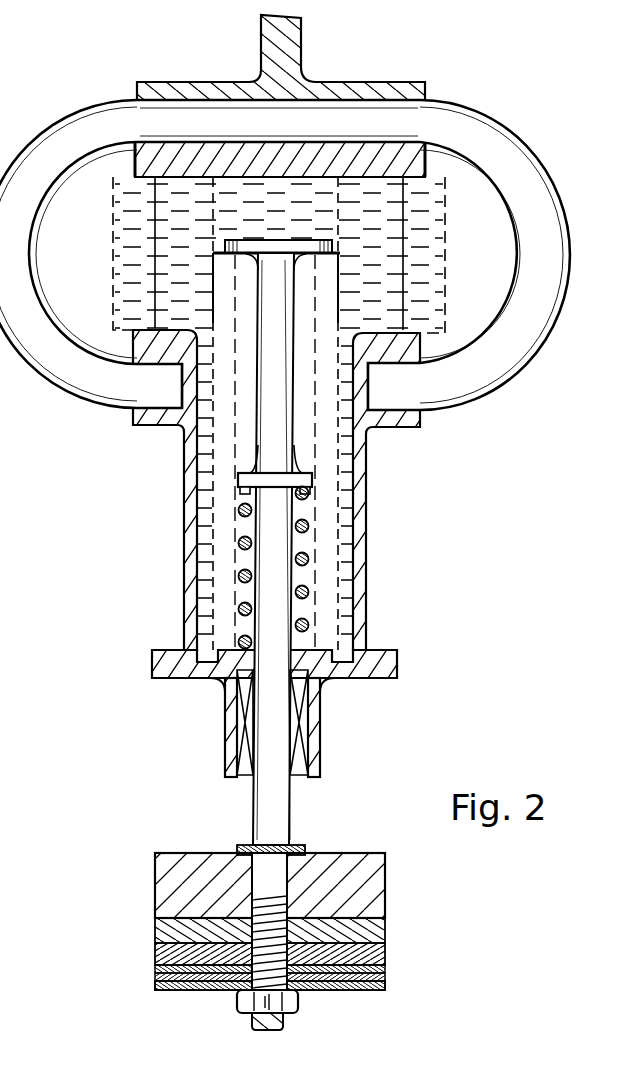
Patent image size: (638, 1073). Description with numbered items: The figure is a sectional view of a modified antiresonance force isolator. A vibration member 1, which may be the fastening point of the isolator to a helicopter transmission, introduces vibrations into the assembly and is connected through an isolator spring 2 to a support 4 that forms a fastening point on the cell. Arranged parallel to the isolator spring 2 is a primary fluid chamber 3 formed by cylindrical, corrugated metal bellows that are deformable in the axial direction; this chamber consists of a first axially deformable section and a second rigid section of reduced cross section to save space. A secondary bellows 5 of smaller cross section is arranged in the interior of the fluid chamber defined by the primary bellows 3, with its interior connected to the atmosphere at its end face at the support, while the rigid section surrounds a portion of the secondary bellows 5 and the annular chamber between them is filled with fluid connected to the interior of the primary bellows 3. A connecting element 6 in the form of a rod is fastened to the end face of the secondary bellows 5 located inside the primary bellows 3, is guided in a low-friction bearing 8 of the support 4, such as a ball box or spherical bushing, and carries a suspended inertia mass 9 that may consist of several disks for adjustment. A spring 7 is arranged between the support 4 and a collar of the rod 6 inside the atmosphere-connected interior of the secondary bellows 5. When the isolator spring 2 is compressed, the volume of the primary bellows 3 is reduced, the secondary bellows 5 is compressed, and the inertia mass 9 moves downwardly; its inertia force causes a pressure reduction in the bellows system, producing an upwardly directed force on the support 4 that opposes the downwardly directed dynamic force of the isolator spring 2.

The vibration member 1 is at (267, 52).
The isolator spring 2 is at (57, 135).
The primary fluid chamber 3 is at (173, 215).
The support 4 is at (153, 413).
The secondary bellows 5 is at (222, 487).
The connecting element 6 is at (268, 545).
The spring 7 is at (237, 613).
The bearing 8 is at (240, 725).
The inertia mass 9 is at (172, 935).